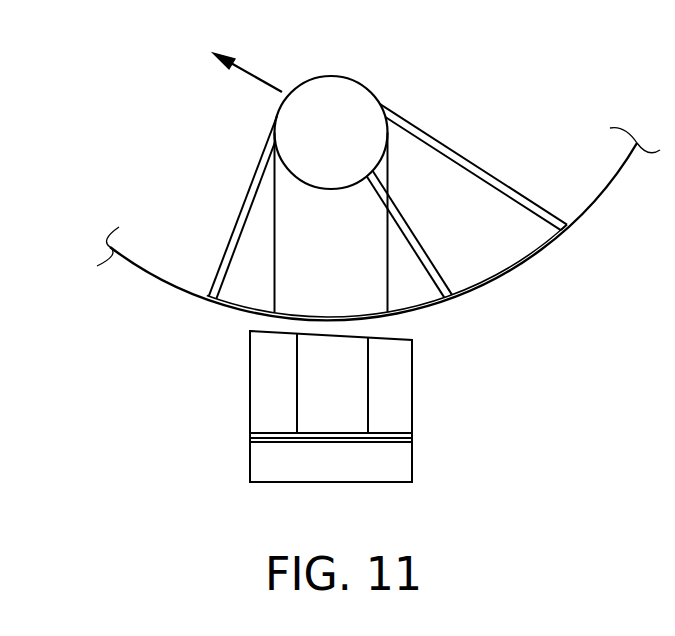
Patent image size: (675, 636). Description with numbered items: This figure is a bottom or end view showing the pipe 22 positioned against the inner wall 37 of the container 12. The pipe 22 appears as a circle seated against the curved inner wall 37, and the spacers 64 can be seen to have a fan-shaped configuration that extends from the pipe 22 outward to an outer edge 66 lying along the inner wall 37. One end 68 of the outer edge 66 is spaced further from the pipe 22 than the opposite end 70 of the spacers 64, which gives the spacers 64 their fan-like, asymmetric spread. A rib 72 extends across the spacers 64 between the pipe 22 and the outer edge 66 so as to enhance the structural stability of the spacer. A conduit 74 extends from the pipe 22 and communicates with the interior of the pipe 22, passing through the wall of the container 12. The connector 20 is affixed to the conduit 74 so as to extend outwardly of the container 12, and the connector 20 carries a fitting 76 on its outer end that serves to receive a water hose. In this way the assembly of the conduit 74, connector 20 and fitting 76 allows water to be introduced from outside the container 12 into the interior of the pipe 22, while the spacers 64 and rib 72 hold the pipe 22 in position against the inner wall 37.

The container 12 is at (147, 275).
The connector 20 is at (400, 386).
The pipe 22 is at (345, 75).
The inner wall 37 is at (598, 192).
The spacers 64 is at (450, 143).
The outer edge 66 is at (512, 268).
The end of the outer edge 68 is at (560, 238).
The opposite end 70 is at (207, 297).
The rib 72 is at (407, 220).
The conduit 74 is at (331, 223).
The fitting 76 is at (412, 448).